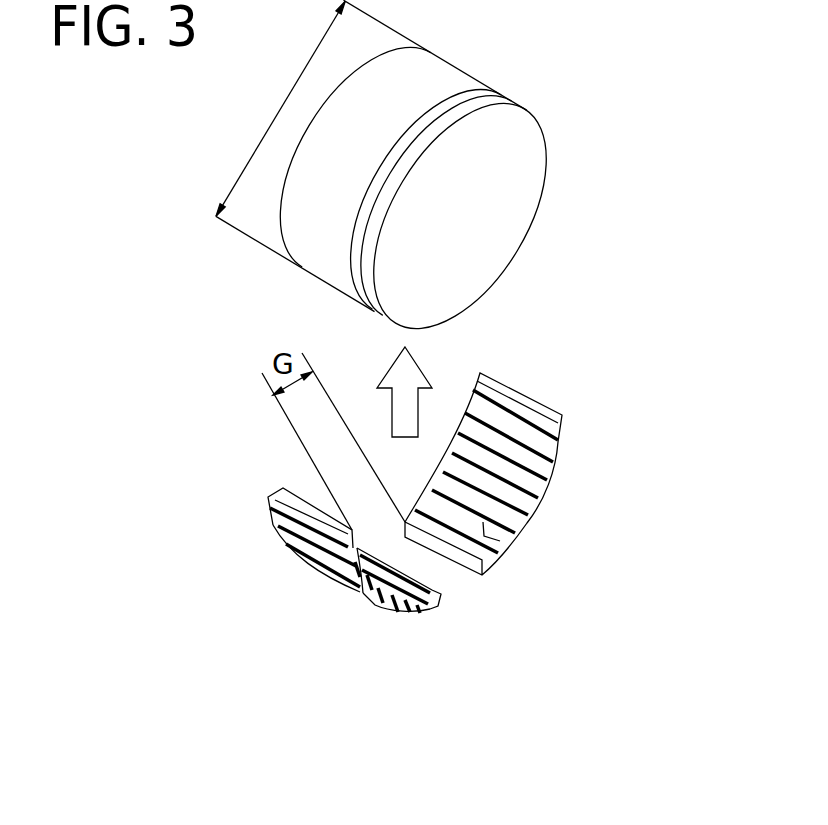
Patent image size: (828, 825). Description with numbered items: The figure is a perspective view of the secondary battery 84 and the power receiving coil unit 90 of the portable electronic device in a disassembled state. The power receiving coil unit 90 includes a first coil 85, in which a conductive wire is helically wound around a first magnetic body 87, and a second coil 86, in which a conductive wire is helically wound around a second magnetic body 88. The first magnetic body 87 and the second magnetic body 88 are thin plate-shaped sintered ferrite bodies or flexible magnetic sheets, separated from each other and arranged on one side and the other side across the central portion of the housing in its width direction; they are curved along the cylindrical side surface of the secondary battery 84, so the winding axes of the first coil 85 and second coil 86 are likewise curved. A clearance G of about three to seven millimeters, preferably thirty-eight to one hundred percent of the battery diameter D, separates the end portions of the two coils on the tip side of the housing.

The secondary battery 84 is at (490, 78).
The first coil 85 is at (440, 577).
The second coil 86 is at (503, 542).
The first magnetic body 87 is at (420, 639).
The second magnetic body 88 is at (518, 500).
The power receiving coil unit 90 is at (452, 546).